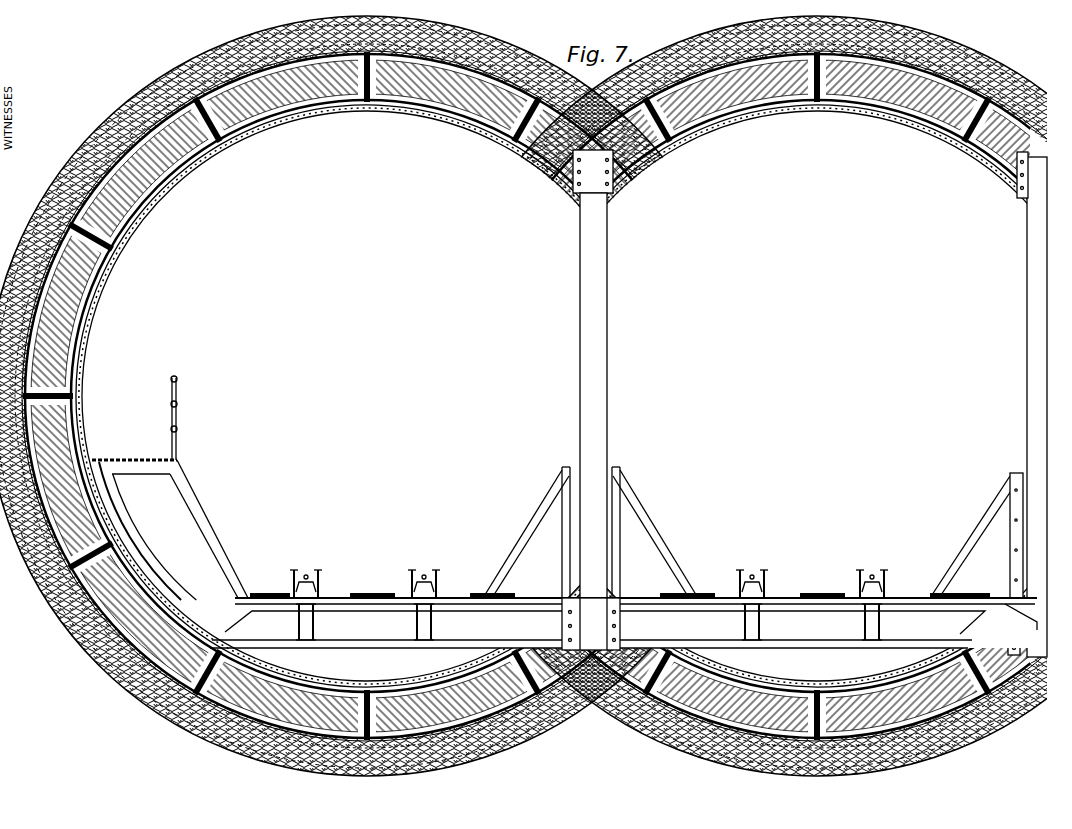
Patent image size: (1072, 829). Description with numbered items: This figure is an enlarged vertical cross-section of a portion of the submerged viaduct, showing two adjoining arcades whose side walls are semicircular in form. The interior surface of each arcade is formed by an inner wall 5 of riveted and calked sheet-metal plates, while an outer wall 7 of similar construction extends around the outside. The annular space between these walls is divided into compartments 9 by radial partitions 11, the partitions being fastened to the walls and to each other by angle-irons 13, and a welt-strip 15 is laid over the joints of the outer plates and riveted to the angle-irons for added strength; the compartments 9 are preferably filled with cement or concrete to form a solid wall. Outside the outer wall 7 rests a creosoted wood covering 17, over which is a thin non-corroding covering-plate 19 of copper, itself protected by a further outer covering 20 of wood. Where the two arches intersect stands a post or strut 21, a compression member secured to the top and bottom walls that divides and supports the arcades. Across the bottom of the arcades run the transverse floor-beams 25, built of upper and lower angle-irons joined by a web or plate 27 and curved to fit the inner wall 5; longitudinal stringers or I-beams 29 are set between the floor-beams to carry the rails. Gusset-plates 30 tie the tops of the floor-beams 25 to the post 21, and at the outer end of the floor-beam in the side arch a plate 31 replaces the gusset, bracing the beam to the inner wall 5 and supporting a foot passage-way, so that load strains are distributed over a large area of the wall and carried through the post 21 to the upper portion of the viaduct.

The inner wall 5 is at (90, 426).
The outer wall 7 is at (718, 760).
The compartments 9 is at (551, 396).
The radial partitions 11 is at (381, 713).
The angle-irons 13 is at (364, 676).
The welt-strip 15 is at (42, 580).
The covering 17 is at (100, 656).
The covering-plate 19 is at (232, 745).
The outer covering 20 is at (149, 714).
The posts or struts 21 is at (603, 441).
The floor-beams 25 is at (365, 600).
The web or plate 27 is at (826, 603).
The longitudinal stringers or I-beams 29 is at (433, 623).
The gusset-plates 30 is at (753, 534).
The plates 31 is at (170, 488).